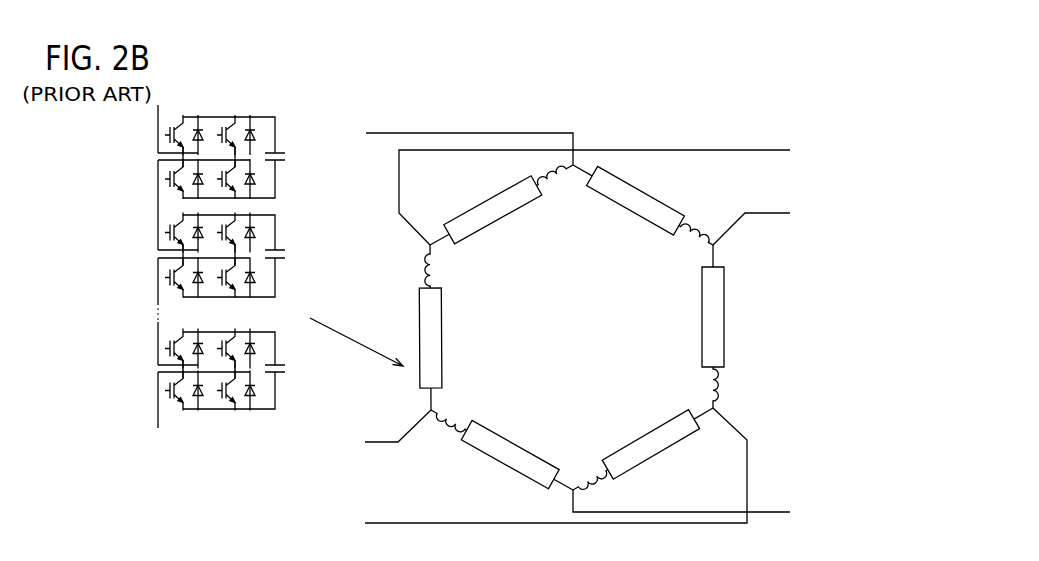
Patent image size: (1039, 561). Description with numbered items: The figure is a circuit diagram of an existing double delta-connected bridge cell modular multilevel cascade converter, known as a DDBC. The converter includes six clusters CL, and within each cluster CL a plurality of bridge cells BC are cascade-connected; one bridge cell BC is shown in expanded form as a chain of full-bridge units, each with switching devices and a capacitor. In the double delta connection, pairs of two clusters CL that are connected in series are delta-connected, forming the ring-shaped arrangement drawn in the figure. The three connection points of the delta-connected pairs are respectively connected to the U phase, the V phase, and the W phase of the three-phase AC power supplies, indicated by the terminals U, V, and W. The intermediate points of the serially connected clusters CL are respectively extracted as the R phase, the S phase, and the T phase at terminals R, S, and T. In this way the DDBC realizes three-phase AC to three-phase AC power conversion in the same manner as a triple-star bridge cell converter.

The bridge cell BC is at (230, 102).
The cluster CL is at (725, 322).
The U phase U is at (462, 143).
The V phase V is at (549, 471).
The W phase W is at (390, 431).
The R phase R is at (690, 507).
The S phase S is at (603, 192).
The T phase T is at (761, 223).